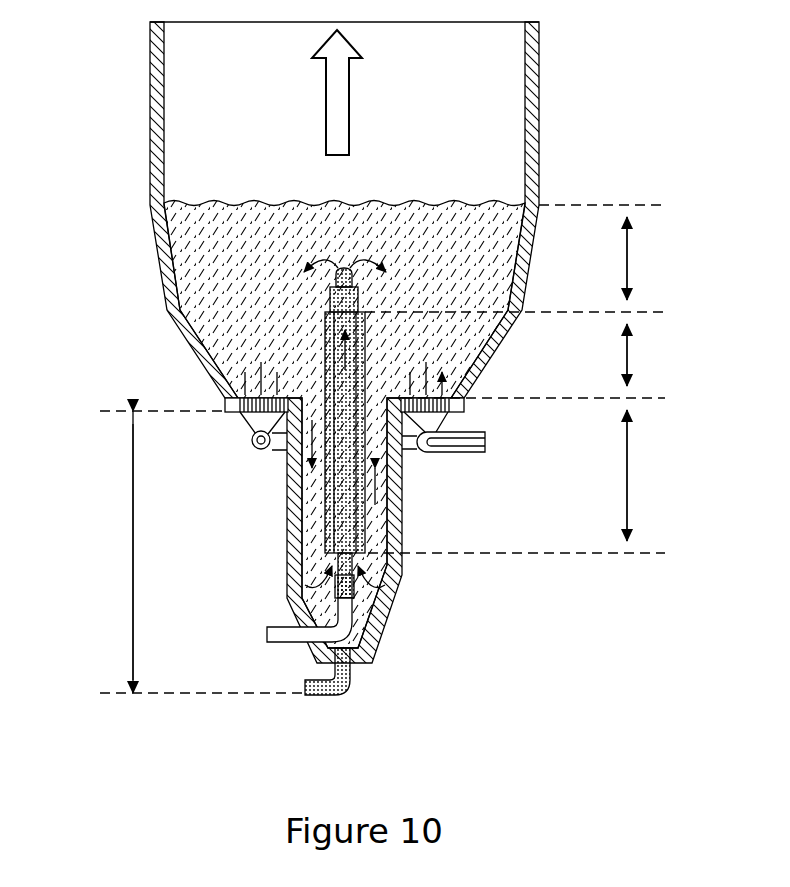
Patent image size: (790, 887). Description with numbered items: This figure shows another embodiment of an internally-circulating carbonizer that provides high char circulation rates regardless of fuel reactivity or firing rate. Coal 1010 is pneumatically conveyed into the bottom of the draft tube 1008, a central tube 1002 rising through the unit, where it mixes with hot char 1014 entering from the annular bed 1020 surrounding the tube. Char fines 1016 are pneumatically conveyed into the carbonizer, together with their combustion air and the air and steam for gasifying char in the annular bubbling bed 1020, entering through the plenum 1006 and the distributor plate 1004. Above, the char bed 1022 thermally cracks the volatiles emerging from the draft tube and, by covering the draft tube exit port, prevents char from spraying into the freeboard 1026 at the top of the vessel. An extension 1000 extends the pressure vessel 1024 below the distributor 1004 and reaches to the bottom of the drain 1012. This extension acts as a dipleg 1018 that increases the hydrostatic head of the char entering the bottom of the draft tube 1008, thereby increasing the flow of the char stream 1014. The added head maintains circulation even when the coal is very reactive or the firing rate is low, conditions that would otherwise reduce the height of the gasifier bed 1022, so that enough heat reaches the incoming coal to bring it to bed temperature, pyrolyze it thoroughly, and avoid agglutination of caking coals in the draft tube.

The extension 1000 is at (133, 552).
The central injection tube 1002 is at (325, 340).
The distributor plate 1004 is at (240, 414).
The plenum 1006 is at (253, 446).
The draft tube 1008 is at (325, 515).
The coal 1010 is at (252, 632).
The drain 1012 is at (268, 686).
The hot char 1014 is at (378, 472).
The char fines 1016 is at (466, 441).
The dipleg 1018 is at (628, 481).
The annular bed 1020 is at (628, 357).
The char bed 1022 is at (628, 270).
The pressure vessel 1024 is at (540, 124).
The freeboard 1026 is at (423, 144).